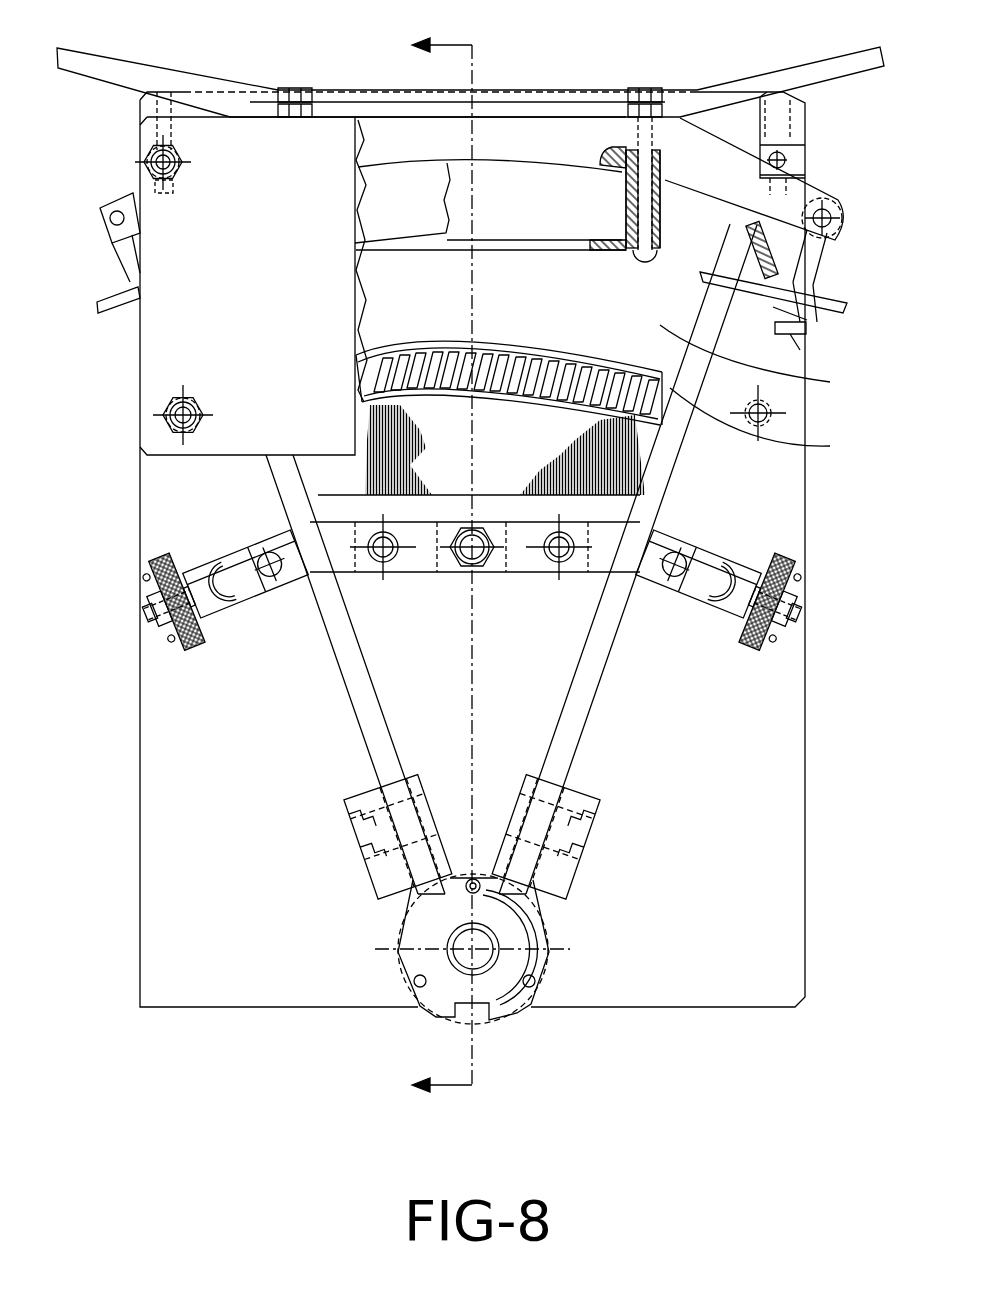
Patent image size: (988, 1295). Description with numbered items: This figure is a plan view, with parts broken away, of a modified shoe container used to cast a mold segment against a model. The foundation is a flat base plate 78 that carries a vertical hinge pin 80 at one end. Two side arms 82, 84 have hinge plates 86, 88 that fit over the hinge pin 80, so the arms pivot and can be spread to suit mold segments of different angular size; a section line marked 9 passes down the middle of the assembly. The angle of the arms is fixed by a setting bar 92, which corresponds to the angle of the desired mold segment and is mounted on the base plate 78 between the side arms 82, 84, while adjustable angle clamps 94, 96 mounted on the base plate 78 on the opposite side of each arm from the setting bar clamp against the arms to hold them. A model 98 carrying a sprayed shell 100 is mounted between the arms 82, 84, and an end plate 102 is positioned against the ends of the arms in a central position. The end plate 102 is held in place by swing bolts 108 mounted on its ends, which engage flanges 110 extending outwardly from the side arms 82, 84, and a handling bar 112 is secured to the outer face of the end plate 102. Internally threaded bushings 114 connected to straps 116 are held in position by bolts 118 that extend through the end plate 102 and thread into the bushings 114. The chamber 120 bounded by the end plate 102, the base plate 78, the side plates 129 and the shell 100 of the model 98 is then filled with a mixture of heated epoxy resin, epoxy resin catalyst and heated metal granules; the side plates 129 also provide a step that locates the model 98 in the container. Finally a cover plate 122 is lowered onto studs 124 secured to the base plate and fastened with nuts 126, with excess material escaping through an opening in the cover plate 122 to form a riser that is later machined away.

The section line 9- 9 is at (429, 566).
The base plate 78 is at (740, 950).
The hinge pin 80 is at (468, 935).
The side arm 82 is at (352, 695).
The side arm 84 is at (607, 645).
The hinge plate 86 is at (553, 826).
The hinge plate 88 is at (360, 832).
The setting bar 92 is at (523, 568).
The adjustable angle clamp 94 is at (241, 555).
The adjustable angle clamp 96 is at (700, 556).
The model 98 is at (322, 467).
The sprayed shell 100 is at (545, 338).
The end plate 102 is at (528, 140).
The swing bolt 108 is at (122, 252).
The flange 110 is at (105, 298).
The handling bar 112 is at (92, 62).
The internally threaded bushing 114 is at (627, 202).
The strap 116 is at (519, 247).
The bolt 118 is at (308, 100).
The chamber 120 is at (771, 363).
The cover plate 122 is at (165, 367).
The stud 124 is at (152, 160).
The nut 126 is at (146, 170).
The side plate 129 is at (776, 426).